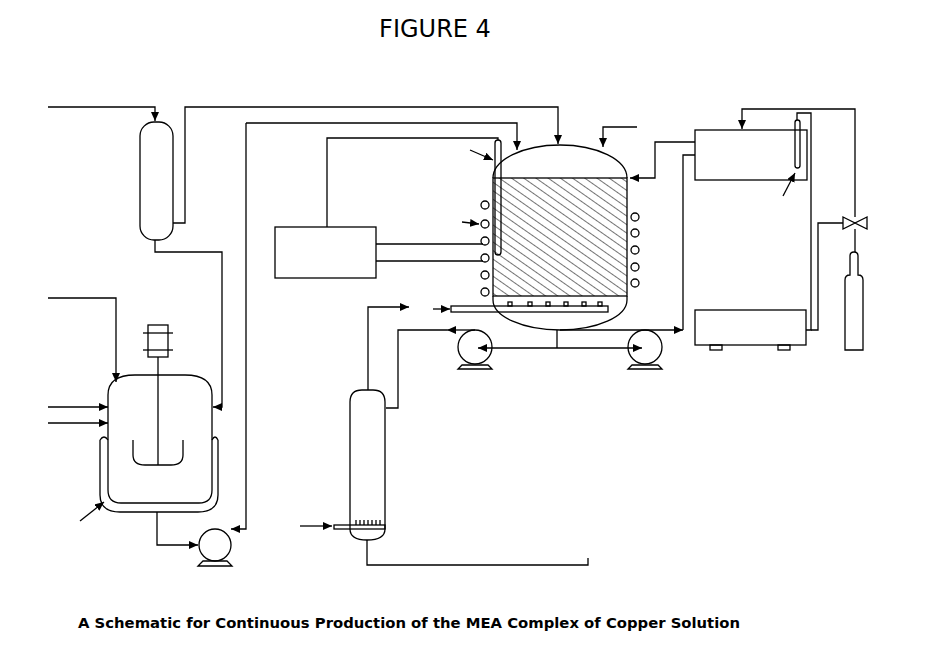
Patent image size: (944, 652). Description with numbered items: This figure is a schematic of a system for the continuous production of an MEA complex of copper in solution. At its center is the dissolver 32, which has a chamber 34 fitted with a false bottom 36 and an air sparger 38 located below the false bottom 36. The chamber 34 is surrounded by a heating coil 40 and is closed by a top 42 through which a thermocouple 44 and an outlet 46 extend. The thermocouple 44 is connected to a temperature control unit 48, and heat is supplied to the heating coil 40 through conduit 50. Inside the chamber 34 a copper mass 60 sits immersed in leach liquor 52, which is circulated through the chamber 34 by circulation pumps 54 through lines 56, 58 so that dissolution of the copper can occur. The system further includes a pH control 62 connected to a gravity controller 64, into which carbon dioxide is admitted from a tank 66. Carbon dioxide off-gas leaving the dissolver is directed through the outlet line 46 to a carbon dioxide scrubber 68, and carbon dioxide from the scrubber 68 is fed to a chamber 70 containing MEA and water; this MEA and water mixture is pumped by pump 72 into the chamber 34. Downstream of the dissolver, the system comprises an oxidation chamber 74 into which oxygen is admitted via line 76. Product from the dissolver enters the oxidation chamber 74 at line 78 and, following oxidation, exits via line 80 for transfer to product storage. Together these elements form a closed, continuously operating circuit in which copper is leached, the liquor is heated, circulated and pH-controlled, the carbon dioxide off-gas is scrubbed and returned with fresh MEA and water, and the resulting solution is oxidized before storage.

The dissolver 32 is at (585, 278).
The chamber 34 is at (612, 162).
The false bottom 36 is at (612, 302).
The air sparger 38 is at (462, 303).
The heating coil 40 is at (481, 207).
The top 42 is at (570, 145).
The thermocouple 44 is at (495, 165).
The outlet 46 is at (466, 107).
The temperature control unit 48 is at (318, 227).
The conduit 50 is at (425, 262).
The leach liquor 52 is at (628, 267).
The circulation pumps 54 is at (476, 370).
The line 56 is at (686, 283).
The line 58 is at (557, 350).
The copper mass 60 is at (628, 198).
The pH control 62 is at (745, 338).
The gravity controller 64 is at (722, 137).
The tank 66 is at (850, 325).
The carbon dioxide scrubber 68 is at (168, 122).
The chamber 70 is at (106, 431).
The pump 72 is at (229, 551).
The oxidation chamber 74 is at (387, 466).
The line 76 is at (333, 531).
The line 78 is at (398, 382).
The line 80 is at (465, 565).